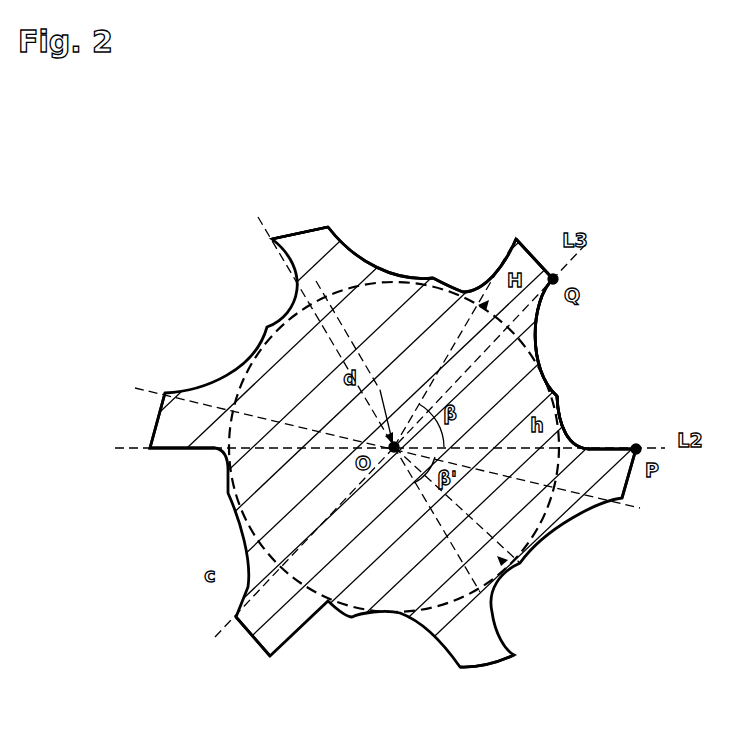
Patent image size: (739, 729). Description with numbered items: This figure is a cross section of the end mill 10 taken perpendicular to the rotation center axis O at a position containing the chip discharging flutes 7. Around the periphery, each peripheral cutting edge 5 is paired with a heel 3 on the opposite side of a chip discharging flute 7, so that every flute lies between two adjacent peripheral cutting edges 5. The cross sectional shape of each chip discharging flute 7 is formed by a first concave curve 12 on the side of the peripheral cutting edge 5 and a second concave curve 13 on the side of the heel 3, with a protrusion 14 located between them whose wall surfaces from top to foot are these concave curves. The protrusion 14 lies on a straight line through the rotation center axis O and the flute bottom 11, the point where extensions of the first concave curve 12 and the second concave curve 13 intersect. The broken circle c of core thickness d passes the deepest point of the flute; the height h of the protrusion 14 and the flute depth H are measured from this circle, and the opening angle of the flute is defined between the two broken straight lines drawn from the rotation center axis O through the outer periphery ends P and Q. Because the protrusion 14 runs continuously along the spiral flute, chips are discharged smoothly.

The heel 3 is at (328, 227).
The peripheral cutting edge 5 is at (272, 240).
The chip discharging flute 7 is at (617, 300).
The end mill 10 is at (218, 327).
The flute bottom 11 is at (433, 286).
The first concave curve 12 is at (464, 290).
The second concave curve 13 is at (403, 280).
The protrusion 14 is at (437, 279).